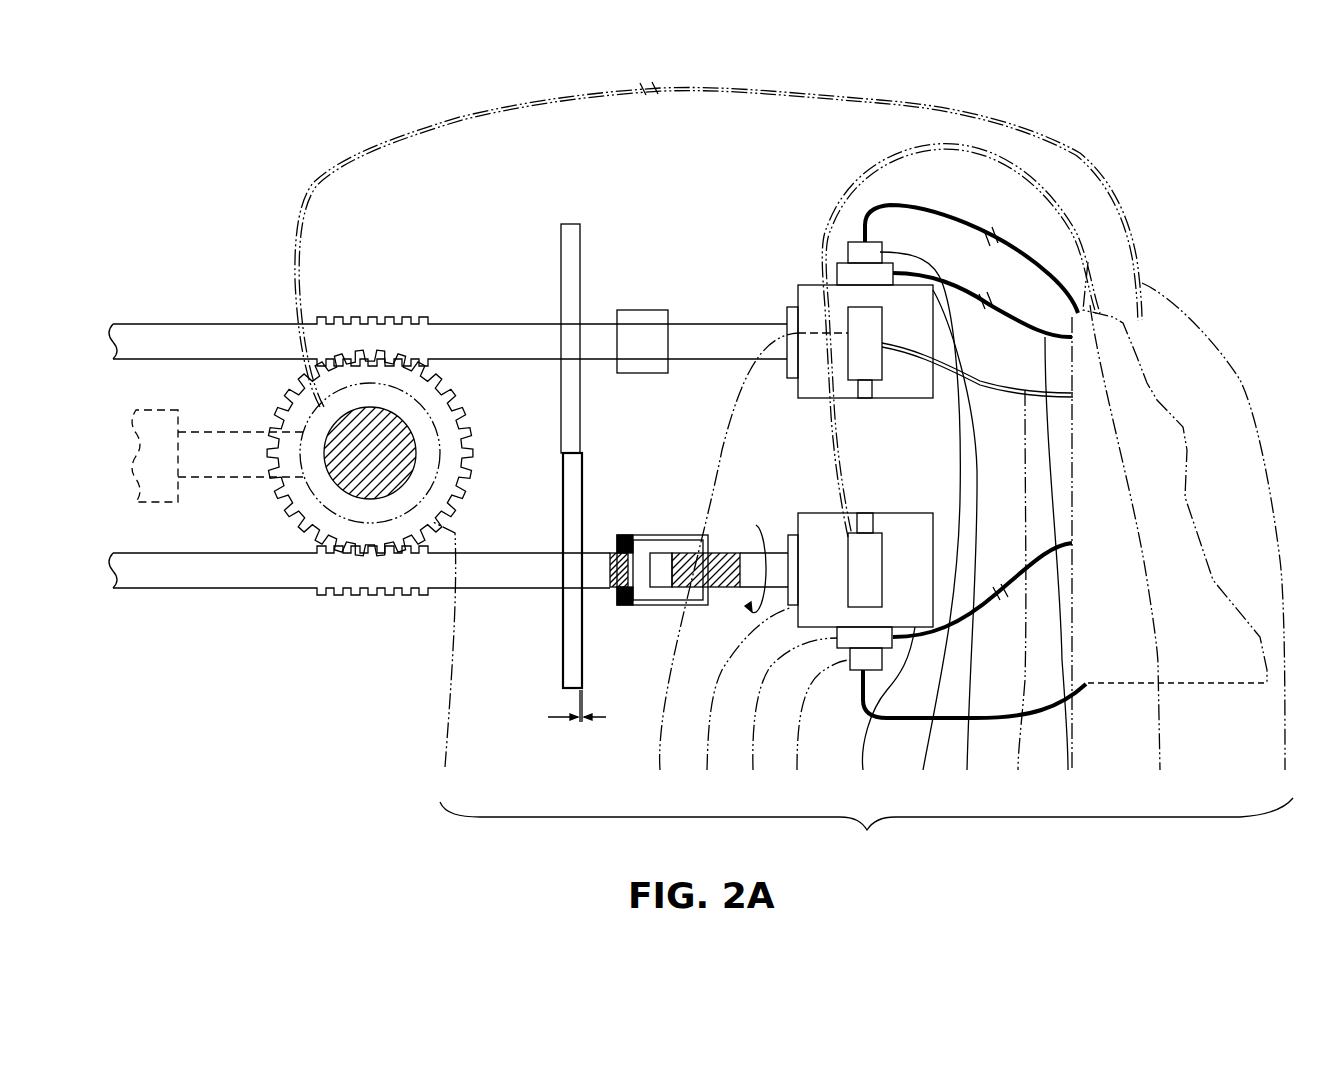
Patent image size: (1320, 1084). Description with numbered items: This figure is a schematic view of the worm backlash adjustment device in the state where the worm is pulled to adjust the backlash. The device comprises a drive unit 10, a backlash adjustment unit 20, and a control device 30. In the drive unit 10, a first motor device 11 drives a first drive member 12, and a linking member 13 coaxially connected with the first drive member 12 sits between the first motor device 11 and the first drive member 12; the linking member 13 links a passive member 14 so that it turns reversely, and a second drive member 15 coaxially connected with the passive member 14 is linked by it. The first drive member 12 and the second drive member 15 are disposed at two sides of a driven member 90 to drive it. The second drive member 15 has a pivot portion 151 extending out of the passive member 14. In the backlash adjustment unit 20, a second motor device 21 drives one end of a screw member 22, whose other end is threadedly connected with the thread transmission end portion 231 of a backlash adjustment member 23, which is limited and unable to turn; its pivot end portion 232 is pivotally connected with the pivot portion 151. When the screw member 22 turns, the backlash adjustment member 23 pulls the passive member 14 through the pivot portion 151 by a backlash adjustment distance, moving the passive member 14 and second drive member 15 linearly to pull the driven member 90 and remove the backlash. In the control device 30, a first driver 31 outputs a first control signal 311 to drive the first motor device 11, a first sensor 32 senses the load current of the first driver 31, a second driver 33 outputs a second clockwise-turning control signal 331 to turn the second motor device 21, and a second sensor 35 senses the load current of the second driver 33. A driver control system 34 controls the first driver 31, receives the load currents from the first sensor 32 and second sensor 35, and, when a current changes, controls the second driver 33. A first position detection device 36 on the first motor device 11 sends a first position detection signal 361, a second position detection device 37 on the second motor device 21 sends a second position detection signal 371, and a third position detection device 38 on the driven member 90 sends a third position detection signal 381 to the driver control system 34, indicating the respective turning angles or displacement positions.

The drive unit 10 is at (813, 282).
The first motor device 11 is at (797, 283).
The first drive member 12 is at (370, 317).
The linking member 13 is at (580, 257).
The passive member 14 is at (560, 620).
The second drive member 15 is at (313, 596).
The pivot portion 151 is at (632, 588).
The backlash adjustment unit 20 is at (895, 514).
The second motor device 21 is at (822, 513).
The screw member 22 is at (722, 552).
The backlash adjustment member 23 is at (703, 535).
The thread transmission end portion 231 is at (665, 564).
The pivot end portion 232 is at (628, 535).
The control device 30 is at (866, 832).
The first driver 31 is at (920, 527).
The first control signal 311 is at (1070, 560).
The first sensor 32 is at (958, 546).
The second driver 33 is at (787, 720).
The second clockwise-turning control signal 331 is at (877, 715).
The driver control system 34 is at (1228, 683).
The second sensor 35 is at (816, 731).
The first position detection device 36 is at (721, 568).
The first position detection signal 361 is at (1022, 596).
The second position detection device 37 is at (741, 705).
The second position detection signal 371 is at (1136, 554).
The third position detection device 38 is at (718, 440).
The third position detection signal 381 is at (1229, 543).
The driven member 90 is at (300, 397).